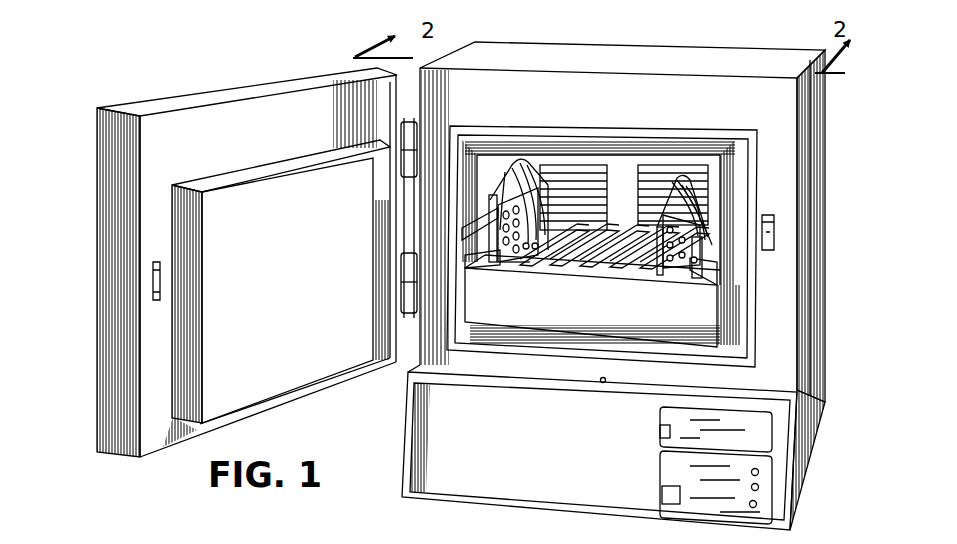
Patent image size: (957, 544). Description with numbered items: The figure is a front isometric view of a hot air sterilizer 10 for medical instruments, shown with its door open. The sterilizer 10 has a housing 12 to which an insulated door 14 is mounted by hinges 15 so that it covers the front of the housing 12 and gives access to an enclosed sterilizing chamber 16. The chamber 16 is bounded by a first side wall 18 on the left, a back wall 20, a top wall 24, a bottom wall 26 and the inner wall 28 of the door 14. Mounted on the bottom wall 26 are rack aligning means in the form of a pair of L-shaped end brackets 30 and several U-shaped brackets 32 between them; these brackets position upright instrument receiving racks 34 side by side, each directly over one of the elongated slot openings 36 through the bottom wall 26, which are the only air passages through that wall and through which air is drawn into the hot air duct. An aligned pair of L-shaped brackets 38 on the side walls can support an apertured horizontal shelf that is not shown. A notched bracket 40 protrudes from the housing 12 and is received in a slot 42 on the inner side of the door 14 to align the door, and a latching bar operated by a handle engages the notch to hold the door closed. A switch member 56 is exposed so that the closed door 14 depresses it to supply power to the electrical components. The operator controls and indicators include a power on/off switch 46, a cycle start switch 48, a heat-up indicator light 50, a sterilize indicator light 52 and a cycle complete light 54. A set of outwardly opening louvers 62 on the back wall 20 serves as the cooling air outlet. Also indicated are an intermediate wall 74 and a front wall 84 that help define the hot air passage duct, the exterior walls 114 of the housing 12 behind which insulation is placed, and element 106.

The hot air sterilizer 10 is at (641, 203).
The housing 12 is at (715, 56).
The insulated door 14 is at (172, 100).
The hinges 15 is at (400, 128).
The sterilizing chamber 16 is at (703, 200).
The first side wall 18 is at (494, 171).
The back wall 20 is at (613, 454).
The top wall 24 is at (260, 539).
The bottom wall 26 is at (562, 277).
The inner wall 28 is at (314, 266).
The L-shaped end brackets 30 is at (497, 268).
The U-shaped brackets 32 is at (520, 272).
The instrument receiving racks 34 is at (512, 165).
The openings 36 is at (575, 272).
The L-shaped brackets 38 is at (467, 228).
The notched bracket 40 is at (775, 228).
The slot 42 is at (157, 262).
The power on/off switch 46 is at (660, 430).
The cycle start switch 48 is at (662, 492).
The heat-up indicator light 50 is at (759, 473).
The sterilize indicator light 52 is at (759, 488).
The cycle complete light 54 is at (757, 505).
The switch member 56 is at (603, 380).
The outwardly opening louvers 62 is at (662, 178).
The intermediate wall 74 is at (315, 539).
The front wall 84 is at (537, 305).
The fastener 106 is at (610, 539).
The exterior walls 114 is at (812, 145).